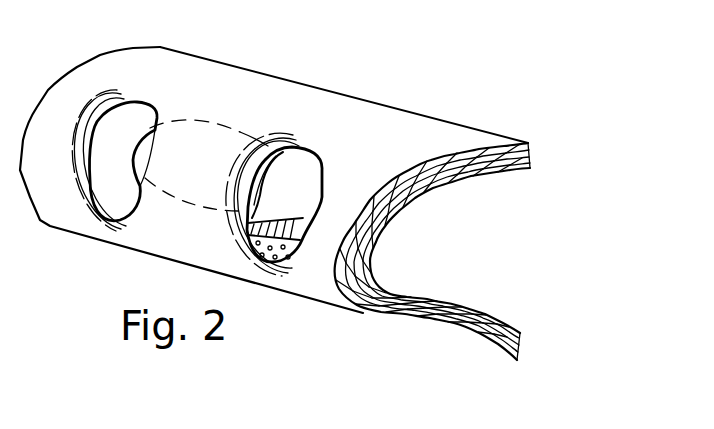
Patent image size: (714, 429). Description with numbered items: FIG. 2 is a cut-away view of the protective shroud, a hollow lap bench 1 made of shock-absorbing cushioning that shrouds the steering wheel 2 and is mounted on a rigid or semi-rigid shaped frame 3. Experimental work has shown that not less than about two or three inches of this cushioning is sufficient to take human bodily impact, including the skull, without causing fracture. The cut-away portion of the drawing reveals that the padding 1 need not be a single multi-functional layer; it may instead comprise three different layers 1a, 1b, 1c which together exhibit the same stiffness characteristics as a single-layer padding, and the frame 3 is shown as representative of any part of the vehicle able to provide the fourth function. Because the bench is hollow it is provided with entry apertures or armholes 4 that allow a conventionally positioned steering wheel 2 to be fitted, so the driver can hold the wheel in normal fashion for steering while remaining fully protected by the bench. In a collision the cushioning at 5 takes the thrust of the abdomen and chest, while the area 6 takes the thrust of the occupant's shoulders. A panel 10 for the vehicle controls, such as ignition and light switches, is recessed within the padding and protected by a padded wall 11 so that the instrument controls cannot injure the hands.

The bench 1 is at (432, 230).
The first padding layer 1a is at (396, 322).
The second padding layer 1b is at (465, 303).
The third padding layer 1c is at (387, 291).
The steering wheel 2 is at (281, 171).
The frame 3 is at (481, 172).
The armholes 4 is at (119, 168).
The cushioning 5 is at (191, 243).
The area 6 is at (168, 98).
The panel 10 is at (296, 252).
The padded wall 11 is at (295, 224).